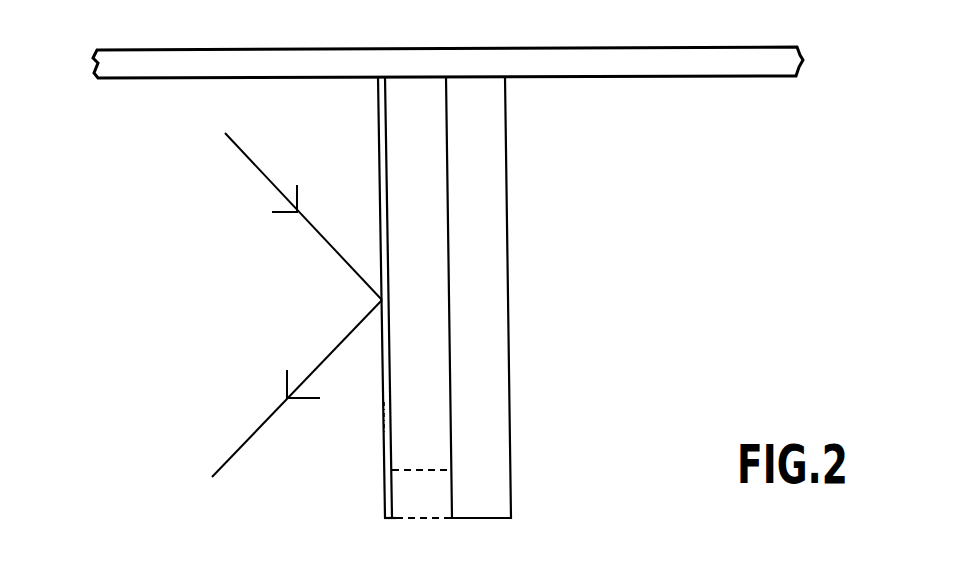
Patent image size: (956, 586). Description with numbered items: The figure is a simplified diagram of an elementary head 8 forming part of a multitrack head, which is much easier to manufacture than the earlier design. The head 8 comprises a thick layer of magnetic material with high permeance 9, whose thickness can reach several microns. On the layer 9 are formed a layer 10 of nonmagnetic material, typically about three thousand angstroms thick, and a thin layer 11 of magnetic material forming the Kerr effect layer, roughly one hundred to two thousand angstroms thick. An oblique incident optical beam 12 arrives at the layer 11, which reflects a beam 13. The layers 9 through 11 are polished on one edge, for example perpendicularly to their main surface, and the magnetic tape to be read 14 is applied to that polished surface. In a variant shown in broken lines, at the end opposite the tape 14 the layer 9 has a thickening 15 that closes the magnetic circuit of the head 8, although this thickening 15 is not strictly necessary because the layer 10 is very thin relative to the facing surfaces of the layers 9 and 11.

The elementary head 8 is at (257, 305).
The thick layer of magnetic material with high permeance 9 is at (495, 175).
The layer of nonmagnetic material 10 is at (407, 431).
The thin layer of magnetic material forming the Kerr effect layer 11 is at (385, 152).
The oblique incident optical beam 12 is at (252, 165).
The reflected beam 13 is at (267, 417).
The magnetic tape to be read 14 is at (305, 58).
The thickening 15 is at (408, 507).